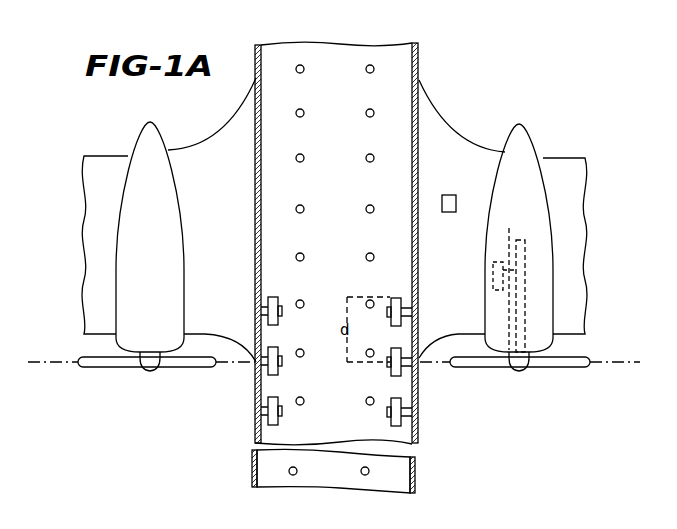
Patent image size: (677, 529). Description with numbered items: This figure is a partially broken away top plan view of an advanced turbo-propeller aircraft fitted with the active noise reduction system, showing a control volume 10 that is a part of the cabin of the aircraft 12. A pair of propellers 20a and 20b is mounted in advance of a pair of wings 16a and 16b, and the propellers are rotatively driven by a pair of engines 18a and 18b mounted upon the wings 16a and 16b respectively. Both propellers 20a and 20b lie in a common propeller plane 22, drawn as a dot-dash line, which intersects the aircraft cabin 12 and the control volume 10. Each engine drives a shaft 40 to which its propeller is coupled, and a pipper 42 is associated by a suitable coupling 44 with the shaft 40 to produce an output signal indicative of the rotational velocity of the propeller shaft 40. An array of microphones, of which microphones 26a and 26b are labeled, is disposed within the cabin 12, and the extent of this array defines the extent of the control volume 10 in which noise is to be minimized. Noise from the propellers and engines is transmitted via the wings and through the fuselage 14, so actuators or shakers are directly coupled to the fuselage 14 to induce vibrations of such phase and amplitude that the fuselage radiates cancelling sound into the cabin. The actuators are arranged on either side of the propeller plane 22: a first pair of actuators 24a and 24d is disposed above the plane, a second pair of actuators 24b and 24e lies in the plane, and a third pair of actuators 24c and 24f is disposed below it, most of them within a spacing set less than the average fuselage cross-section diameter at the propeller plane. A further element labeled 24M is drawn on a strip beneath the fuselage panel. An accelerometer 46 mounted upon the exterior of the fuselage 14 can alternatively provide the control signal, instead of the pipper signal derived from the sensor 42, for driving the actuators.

The control volume 10 is at (346, 190).
The aircraft cabin 12 is at (276, 60).
The fuselage 14 is at (420, 49).
The wing 16a is at (437, 330).
The wing 16b is at (235, 338).
The engine 18a is at (540, 148).
The engine 18b is at (140, 137).
The propeller 20a is at (568, 370).
The propeller 20b is at (80, 369).
The propeller plane 22 is at (615, 362).
The actuator 24a is at (395, 297).
The actuator 24b is at (389, 372).
The actuator 24c is at (390, 420).
The actuator 24d is at (278, 298).
The actuator 24e is at (279, 350).
The actuator 24f is at (256, 400).
The transducer mounting strip 24M is at (366, 476).
The microphone 26a is at (302, 74).
The microphone 26b is at (302, 118).
The shaft 40 is at (458, 276).
The pipper 42 is at (474, 276).
The coupling 44 is at (511, 281).
The accelerometer 46 is at (453, 195).